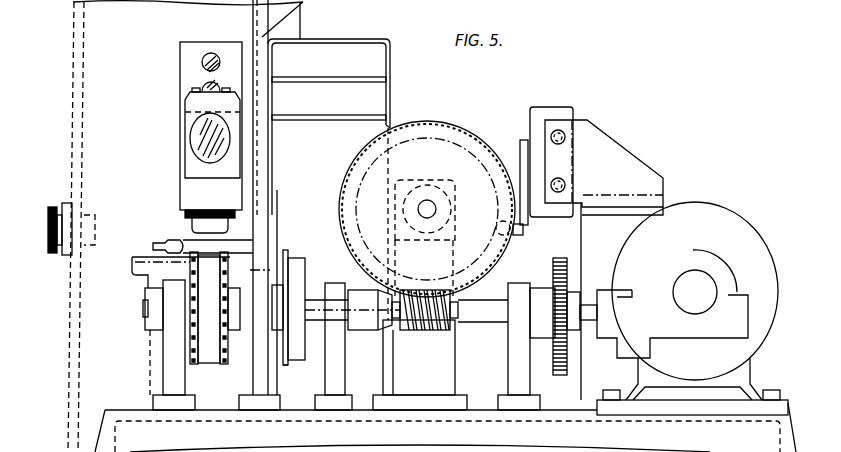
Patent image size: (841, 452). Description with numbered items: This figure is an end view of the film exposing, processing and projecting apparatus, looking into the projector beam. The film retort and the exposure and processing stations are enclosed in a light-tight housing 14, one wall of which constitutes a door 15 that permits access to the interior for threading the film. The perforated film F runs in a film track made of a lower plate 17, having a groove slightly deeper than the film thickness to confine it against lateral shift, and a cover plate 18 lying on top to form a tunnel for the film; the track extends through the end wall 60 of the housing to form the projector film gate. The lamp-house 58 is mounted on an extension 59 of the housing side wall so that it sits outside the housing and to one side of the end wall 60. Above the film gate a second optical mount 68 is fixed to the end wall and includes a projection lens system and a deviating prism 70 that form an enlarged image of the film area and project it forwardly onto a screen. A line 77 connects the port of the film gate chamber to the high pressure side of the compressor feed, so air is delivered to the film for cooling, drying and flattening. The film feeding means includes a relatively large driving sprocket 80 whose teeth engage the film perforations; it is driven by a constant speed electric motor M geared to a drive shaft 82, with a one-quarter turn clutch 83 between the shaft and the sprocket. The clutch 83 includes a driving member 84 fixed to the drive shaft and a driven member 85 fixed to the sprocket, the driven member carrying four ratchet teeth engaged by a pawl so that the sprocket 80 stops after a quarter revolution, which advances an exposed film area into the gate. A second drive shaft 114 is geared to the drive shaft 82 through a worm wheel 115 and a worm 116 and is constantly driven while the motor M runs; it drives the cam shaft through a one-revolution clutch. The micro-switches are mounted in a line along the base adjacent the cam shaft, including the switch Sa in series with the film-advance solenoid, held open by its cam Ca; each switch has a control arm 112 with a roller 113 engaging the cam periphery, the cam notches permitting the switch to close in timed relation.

The light-tight housing 14 is at (188, 15).
The door 15 is at (72, 152).
The extension of the side wall 59 is at (304, 18).
The lamp-house 58 is at (329, 217).
The end wall 60 is at (392, 122).
The deviating prism 70 is at (192, 138).
The second optical mount 68 is at (185, 214).
The cover plate 18 is at (192, 236).
The perforated film F is at (220, 252).
The line 77 is at (153, 247).
The lower plate 17 is at (140, 258).
The driving sprocket 80 is at (210, 360).
The drive shaft 82 is at (246, 324).
The one-quarter turn clutch 83 is at (298, 262).
The driving member 84 is at (302, 280).
The driven member 85 is at (288, 373).
The worm 116 is at (433, 331).
The worm wheel 115 is at (452, 123).
The drive shaft 114 is at (433, 208).
The cam Ca is at (470, 156).
The control arm 112 is at (524, 219).
The roller 113 is at (511, 236).
The micro-switch Sa is at (541, 108).
The constant speed electric motor M is at (748, 236).